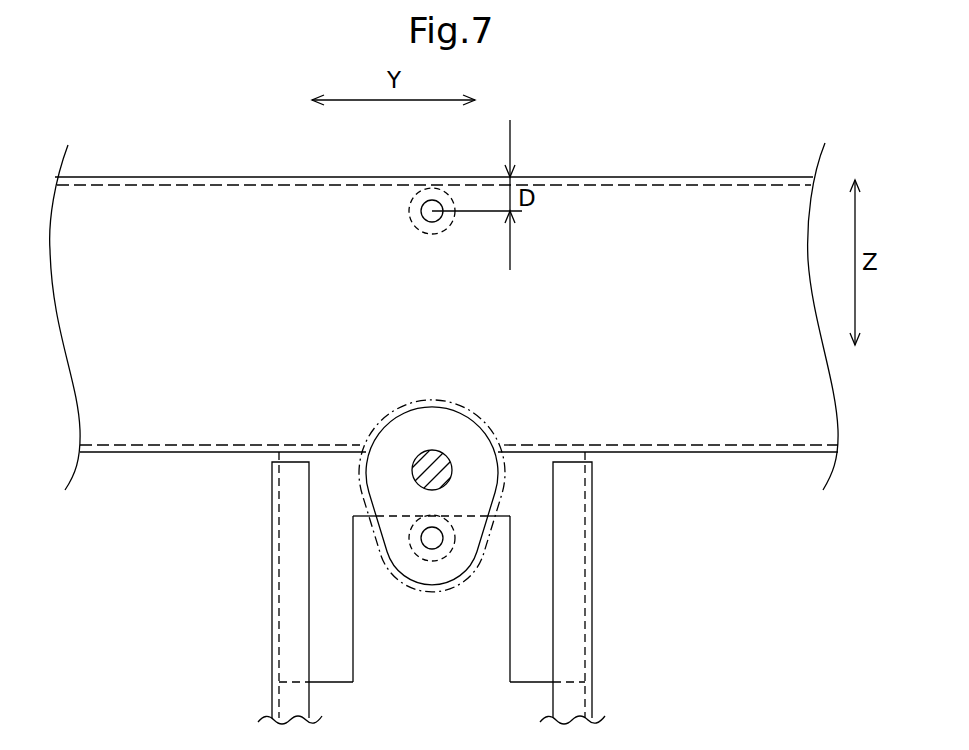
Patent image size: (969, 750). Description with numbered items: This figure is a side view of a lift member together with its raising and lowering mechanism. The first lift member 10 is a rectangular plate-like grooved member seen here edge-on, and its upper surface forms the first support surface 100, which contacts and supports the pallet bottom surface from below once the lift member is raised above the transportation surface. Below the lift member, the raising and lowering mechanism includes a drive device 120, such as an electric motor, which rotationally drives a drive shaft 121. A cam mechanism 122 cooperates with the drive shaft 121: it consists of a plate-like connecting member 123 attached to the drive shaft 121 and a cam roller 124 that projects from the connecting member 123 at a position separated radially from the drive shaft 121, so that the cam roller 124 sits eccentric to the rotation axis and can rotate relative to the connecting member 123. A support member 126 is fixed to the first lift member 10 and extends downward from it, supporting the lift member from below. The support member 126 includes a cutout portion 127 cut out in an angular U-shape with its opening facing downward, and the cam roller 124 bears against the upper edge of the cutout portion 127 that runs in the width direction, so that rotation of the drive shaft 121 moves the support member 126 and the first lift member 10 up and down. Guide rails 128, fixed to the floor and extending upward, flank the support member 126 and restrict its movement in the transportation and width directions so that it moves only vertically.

The first lift member 10 is at (637, 238).
The first support surface 100 is at (270, 177).
The drive device 120 is at (468, 412).
The drive shaft 121 is at (431, 452).
The cam mechanism 122 is at (561, 596).
The connecting member 123 is at (430, 574).
The cam roller 124 is at (438, 538).
The support member 126 is at (335, 567).
The cutout portion 127 is at (483, 600).
The guide rail 128 is at (293, 636).